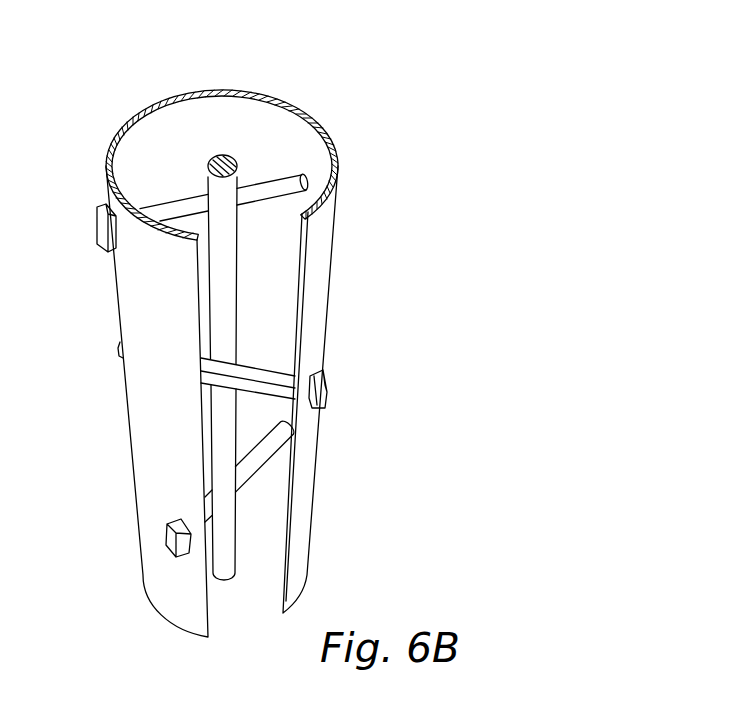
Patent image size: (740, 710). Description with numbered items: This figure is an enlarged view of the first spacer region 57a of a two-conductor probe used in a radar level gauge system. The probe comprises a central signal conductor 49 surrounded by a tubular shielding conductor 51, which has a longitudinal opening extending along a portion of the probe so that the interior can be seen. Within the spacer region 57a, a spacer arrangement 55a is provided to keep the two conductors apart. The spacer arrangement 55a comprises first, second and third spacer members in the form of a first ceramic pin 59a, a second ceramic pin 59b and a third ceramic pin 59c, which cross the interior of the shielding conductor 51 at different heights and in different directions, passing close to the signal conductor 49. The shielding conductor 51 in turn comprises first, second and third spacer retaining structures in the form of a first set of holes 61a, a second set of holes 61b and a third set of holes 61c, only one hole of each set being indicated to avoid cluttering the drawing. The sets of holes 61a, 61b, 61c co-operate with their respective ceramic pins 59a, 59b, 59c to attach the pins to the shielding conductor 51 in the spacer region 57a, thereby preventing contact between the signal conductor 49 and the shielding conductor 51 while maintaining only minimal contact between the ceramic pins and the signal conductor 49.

The signal conductor 49 is at (223, 157).
The shielding conductor 51 is at (128, 124).
The spacer arrangement 55a is at (229, 332).
The spacer region 57a is at (360, 195).
The first ceramic pin 59a is at (155, 203).
The second ceramic pin 59b is at (223, 378).
The third ceramic pin 59c is at (248, 478).
The first set of holes 61a is at (313, 187).
The second set of holes 61b is at (311, 370).
The third set of holes 61c is at (177, 527).